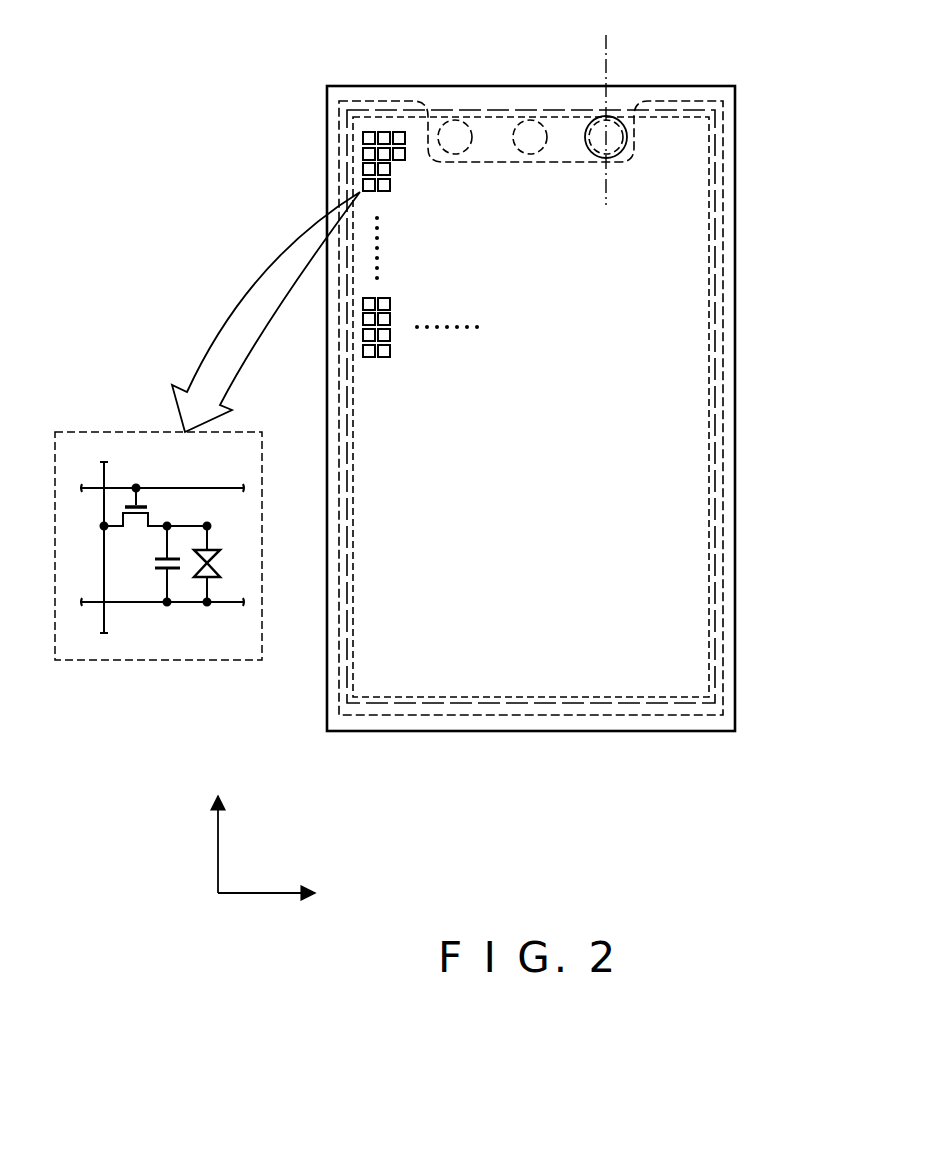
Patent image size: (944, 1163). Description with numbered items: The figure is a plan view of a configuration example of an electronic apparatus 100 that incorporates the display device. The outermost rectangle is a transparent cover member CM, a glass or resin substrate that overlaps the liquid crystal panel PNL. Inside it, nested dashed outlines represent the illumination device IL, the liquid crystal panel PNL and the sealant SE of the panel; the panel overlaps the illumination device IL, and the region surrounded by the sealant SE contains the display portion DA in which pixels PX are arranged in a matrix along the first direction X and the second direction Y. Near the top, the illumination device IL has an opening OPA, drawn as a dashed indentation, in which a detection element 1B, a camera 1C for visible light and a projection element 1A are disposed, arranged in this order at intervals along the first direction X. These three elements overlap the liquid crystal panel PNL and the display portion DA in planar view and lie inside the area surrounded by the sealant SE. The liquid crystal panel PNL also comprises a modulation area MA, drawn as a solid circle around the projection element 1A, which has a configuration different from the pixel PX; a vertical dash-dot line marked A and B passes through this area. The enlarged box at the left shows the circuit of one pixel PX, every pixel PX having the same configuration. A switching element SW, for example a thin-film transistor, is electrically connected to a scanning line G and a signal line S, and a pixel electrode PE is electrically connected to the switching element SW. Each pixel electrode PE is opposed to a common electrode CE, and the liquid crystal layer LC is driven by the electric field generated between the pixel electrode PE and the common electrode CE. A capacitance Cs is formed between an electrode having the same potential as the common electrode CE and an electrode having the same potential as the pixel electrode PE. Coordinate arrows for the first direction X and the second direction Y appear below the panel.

The electronic apparatus 100 is at (752, 118).
The cover member CM is at (735, 430).
The illumination device IL is at (728, 304).
The liquid crystal panel PNL is at (718, 349).
The sealant SE is at (710, 383).
The display portion DA is at (668, 490).
The opening OPA is at (436, 118).
The projection element 1A is at (614, 118).
The detection element 1B is at (466, 120).
The camera 1C is at (541, 120).
The modulation area MA is at (625, 125).
The section line end A is at (603, 111).
The section line end B is at (603, 190).
The pixel PX is at (391, 352).
The scanning line G is at (95, 488).
The signal line S is at (104, 553).
The switching element SW is at (160, 513).
The pixel electrode PE is at (208, 524).
The liquid crystal layer LC is at (221, 563).
The capacitance Cs is at (153, 567).
The common electrode CE is at (207, 604).
The first direction X is at (276, 893).
The second direction Y is at (215, 831).